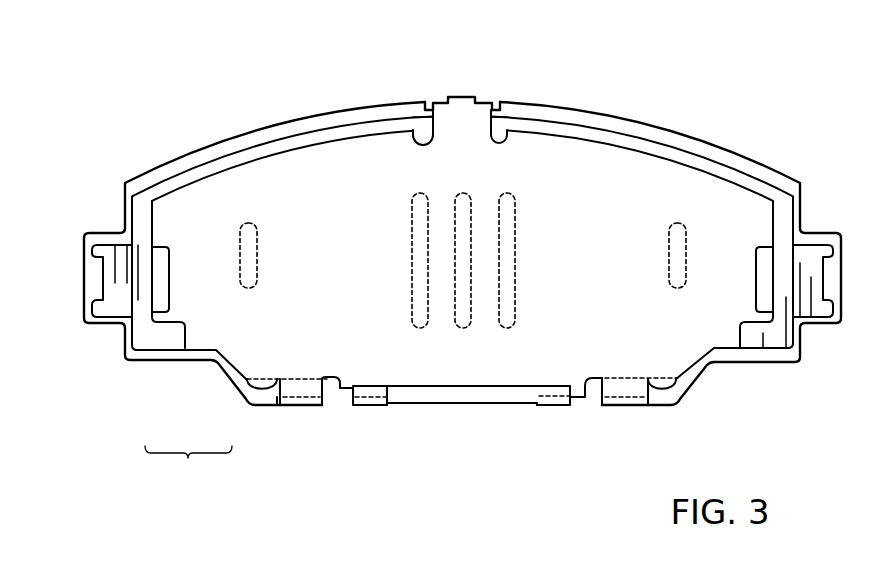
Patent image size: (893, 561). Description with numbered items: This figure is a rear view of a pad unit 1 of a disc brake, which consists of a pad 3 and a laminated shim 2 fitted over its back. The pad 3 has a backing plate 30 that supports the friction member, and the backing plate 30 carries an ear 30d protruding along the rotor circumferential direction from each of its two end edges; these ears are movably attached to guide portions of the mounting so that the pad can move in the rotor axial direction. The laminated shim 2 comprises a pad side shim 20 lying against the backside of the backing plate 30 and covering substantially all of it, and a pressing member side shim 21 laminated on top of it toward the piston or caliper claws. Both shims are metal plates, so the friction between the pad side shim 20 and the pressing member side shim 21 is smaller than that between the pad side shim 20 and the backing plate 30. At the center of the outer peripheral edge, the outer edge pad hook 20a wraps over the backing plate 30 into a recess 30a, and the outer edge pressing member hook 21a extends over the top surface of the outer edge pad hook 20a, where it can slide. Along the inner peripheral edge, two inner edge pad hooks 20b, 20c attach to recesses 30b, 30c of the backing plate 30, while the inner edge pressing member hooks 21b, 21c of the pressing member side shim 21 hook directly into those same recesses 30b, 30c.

The pad unit 1 is at (195, 100).
The laminated shim 2 is at (188, 469).
The pad 3 is at (600, 113).
The pad side shim 20 is at (147, 300).
The outer edge pad hook 20a is at (448, 127).
The inner edge pad hook 20b is at (364, 402).
The inner edge pad hook 20c is at (555, 390).
The pressing member side shim 21 is at (247, 343).
The outer edge pressing member hook 21a is at (463, 117).
The inner edge pressing member hook 21b is at (297, 400).
The inner edge pressing member hook 21c is at (623, 390).
The backing plate 30 is at (290, 130).
The recess 30a is at (496, 107).
The recess 30b is at (391, 404).
The recess 30c is at (648, 402).
The ear 30d is at (92, 283).